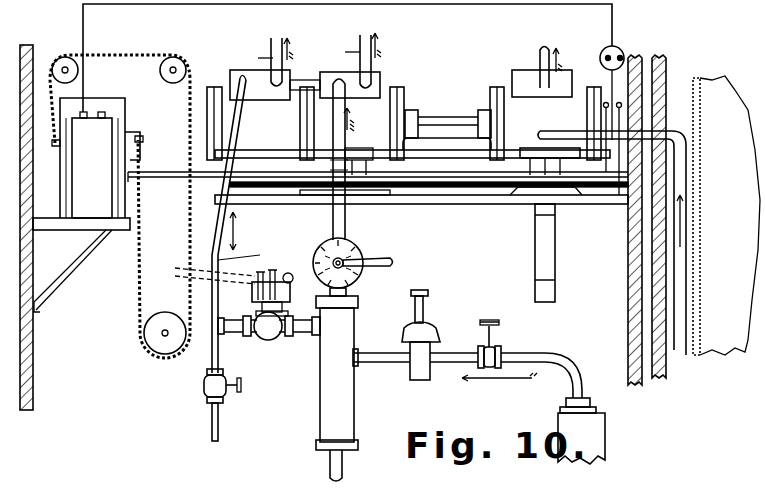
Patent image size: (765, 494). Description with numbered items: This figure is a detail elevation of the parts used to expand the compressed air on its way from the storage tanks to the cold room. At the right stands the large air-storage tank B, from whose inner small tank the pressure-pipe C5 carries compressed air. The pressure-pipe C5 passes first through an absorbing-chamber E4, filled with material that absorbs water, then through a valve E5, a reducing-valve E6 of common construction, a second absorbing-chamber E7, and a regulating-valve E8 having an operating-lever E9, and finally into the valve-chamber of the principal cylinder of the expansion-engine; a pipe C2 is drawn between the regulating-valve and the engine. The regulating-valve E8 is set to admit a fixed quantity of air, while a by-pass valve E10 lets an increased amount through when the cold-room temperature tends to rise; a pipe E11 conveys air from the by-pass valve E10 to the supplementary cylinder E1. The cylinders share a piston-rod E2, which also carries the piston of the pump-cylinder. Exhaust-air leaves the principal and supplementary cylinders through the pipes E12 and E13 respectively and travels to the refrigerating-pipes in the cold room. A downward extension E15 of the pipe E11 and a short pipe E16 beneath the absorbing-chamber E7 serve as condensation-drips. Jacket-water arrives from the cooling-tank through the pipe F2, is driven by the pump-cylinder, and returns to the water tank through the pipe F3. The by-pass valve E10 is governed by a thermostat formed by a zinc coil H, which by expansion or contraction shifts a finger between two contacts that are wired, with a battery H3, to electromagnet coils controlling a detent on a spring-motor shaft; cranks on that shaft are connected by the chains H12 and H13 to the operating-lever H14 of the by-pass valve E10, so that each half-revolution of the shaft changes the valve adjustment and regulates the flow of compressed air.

The large air-storage tank B is at (726, 215).
The pipe to gauge C2 is at (332, 222).
The pressure-pipe C5 is at (572, 375).
The supplementary cylinder E1 is at (295, 108).
The piston-rod E2 is at (435, 125).
The absorbing-chamber E4 is at (590, 438).
The valve E5 is at (490, 358).
The reducing-valve E6 is at (428, 332).
The second absorbing-chamber E7 is at (337, 369).
The regulating-valve E8 is at (355, 281).
The operating-lever E9 is at (392, 260).
The by-pass valve E10 is at (268, 340).
The pipe E11 is at (243, 255).
The exhaust pipe E12 is at (351, 60).
The exhaust pipe E13 is at (552, 98).
The downward extension E15 is at (218, 420).
The short pipe E16 is at (342, 472).
The pipe F2 is at (684, 285).
The pipe F3 is at (540, 62).
The zinc coil H is at (622, 50).
The battery H3 is at (100, 158).
The chain H12 is at (155, 213).
The chain H13 is at (195, 255).
The operating-lever H14 is at (255, 296).